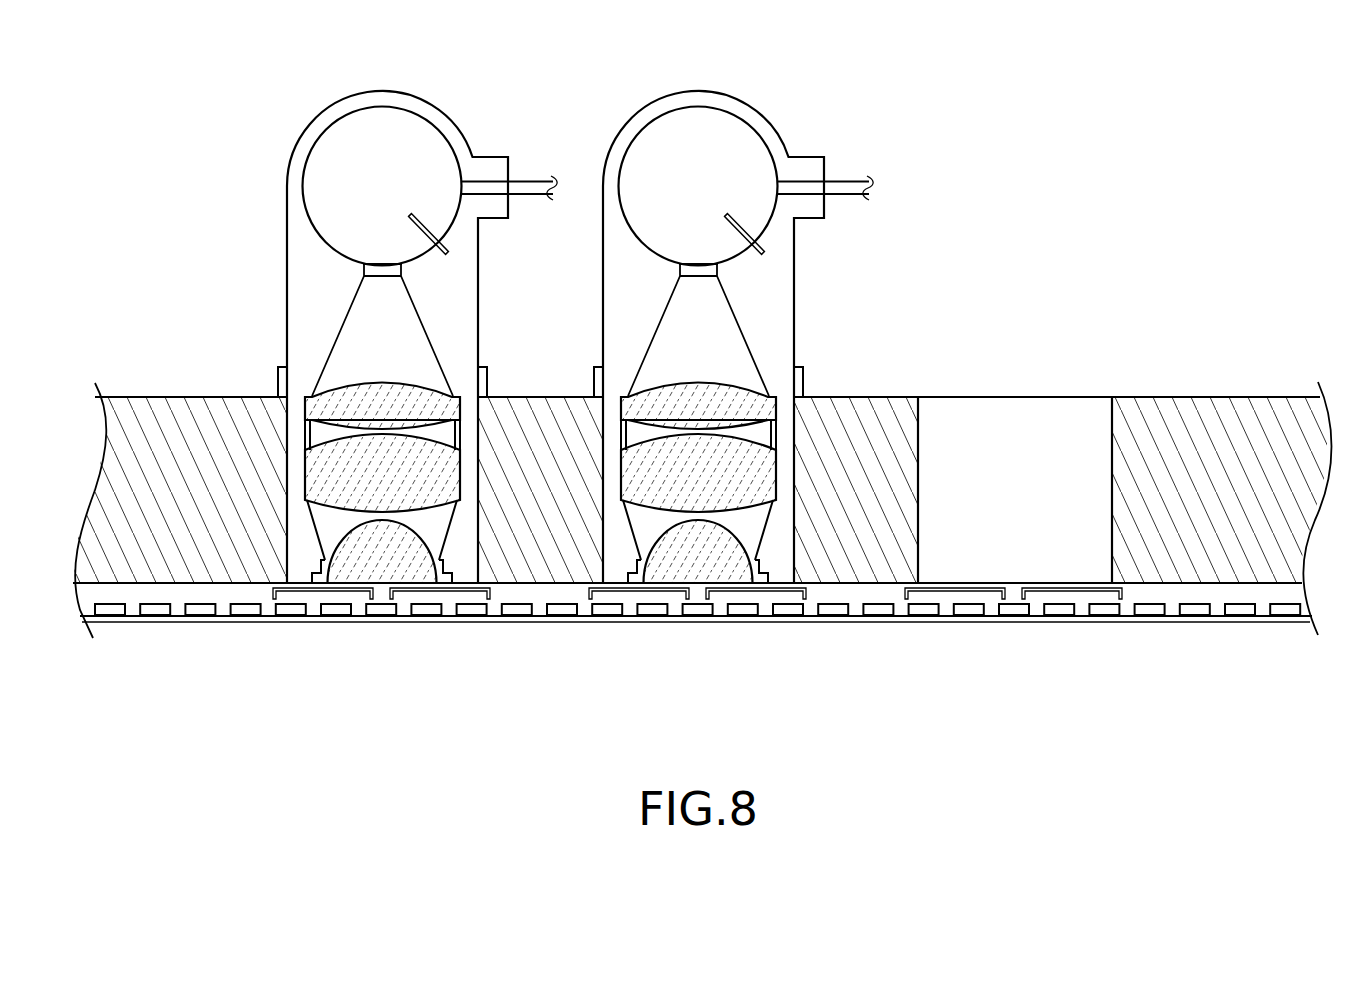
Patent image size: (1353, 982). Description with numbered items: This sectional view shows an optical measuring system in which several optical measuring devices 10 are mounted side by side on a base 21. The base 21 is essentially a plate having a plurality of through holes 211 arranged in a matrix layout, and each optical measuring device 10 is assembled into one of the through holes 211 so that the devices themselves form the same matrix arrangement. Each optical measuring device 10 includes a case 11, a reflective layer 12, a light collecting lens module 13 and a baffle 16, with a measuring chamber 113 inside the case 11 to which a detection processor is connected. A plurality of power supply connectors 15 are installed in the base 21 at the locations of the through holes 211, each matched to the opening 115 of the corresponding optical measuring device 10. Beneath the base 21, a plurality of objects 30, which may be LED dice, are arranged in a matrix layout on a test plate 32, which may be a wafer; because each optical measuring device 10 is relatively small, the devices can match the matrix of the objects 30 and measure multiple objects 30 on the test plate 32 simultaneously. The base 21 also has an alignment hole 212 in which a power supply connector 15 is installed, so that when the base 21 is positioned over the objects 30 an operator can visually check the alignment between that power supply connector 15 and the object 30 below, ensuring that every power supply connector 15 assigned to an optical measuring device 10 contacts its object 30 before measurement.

The optical measuring device 10 is at (537, 351).
The case 11 is at (355, 378).
The reflective layer 12 is at (307, 145).
The measuring chamber 113 is at (366, 147).
The baffle 16 is at (432, 230).
The light collecting lens module 13 is at (332, 375).
The opening 115 is at (443, 582).
The base 21 is at (701, 482).
The through hole 211 is at (797, 405).
The alignment hole 212 is at (1076, 410).
The power supply connector 15 is at (403, 597).
The object 30 is at (383, 610).
The test plate 32 is at (272, 620).